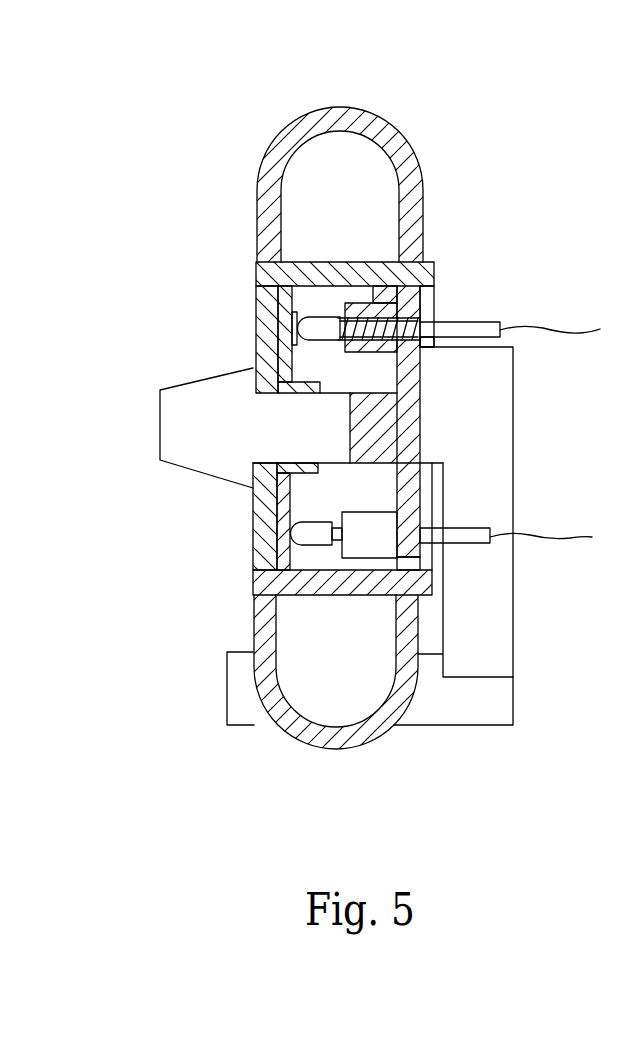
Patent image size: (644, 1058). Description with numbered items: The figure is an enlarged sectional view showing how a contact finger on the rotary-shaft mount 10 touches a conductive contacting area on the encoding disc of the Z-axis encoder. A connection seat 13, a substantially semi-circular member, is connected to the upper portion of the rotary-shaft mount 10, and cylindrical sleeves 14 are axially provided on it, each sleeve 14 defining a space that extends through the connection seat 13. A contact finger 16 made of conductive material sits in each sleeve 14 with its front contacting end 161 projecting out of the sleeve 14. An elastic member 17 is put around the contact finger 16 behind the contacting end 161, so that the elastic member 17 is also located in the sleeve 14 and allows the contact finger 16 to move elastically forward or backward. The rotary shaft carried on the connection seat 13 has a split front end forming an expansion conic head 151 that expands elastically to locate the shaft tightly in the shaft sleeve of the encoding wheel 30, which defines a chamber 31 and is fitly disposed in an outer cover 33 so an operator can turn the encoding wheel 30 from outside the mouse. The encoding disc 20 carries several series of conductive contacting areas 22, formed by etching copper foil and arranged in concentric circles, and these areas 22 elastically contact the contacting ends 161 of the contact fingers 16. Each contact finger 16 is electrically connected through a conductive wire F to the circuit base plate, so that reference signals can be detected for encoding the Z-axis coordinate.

The rotary-shaft mount 10 is at (500, 664).
The connection seat 13 is at (405, 411).
The cylindrical sleeve 14 is at (375, 538).
The expansion conic head 151 is at (178, 460).
The contact finger 16 is at (473, 330).
The contacting end 161 is at (315, 333).
The elastic member 17 is at (420, 318).
The encoding disc 20 is at (285, 353).
The conductive contacting area 22 is at (293, 318).
The encoding wheel 30 is at (265, 272).
The chamber 31 is at (320, 296).
The outer cover 33 is at (372, 128).
The conductive wire F is at (543, 327).